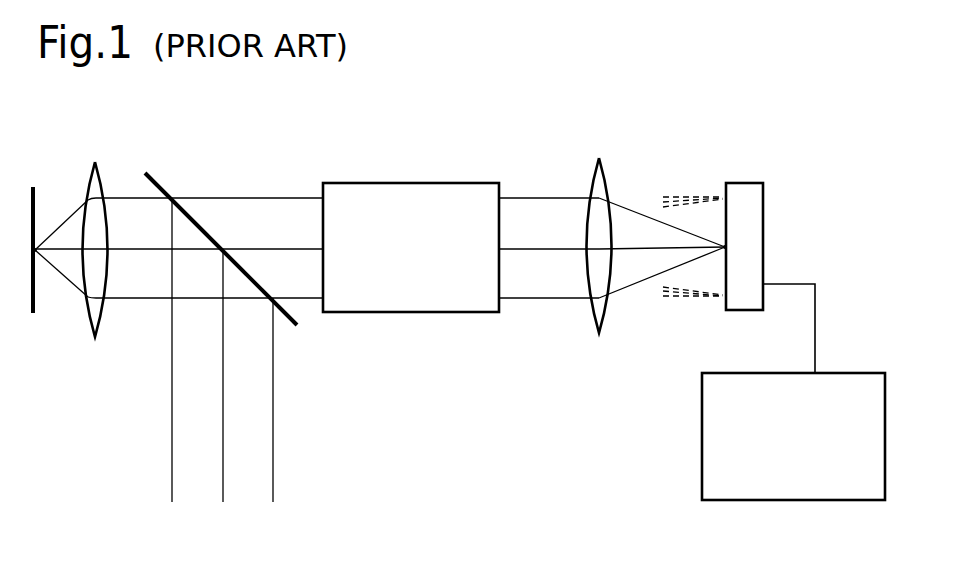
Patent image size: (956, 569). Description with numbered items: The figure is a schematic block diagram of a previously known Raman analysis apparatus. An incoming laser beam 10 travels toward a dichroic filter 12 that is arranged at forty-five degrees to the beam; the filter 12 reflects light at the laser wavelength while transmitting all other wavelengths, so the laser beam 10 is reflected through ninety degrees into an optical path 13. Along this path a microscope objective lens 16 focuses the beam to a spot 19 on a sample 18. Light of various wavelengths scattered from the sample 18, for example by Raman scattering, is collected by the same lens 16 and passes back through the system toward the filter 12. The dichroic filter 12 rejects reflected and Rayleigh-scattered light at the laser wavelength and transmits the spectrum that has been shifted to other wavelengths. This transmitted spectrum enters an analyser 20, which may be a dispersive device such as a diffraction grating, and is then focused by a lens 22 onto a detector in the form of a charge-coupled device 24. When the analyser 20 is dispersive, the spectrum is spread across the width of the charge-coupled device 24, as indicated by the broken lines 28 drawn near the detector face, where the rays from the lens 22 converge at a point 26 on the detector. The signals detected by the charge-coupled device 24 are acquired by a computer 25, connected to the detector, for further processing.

The laser beam 10 is at (253, 465).
The dichroic filter 12 is at (197, 220).
The optical path 13 is at (137, 287).
The microscope objective lens 16 is at (97, 168).
The sample 18 is at (36, 199).
The spot 19 is at (40, 258).
The analyser 20 is at (393, 313).
The lens 22 is at (597, 197).
The charge-coupled device 24 is at (765, 207).
The computer 25 is at (702, 460).
The focus point on CCD 26 is at (725, 252).
The broken lines 28 is at (687, 197).